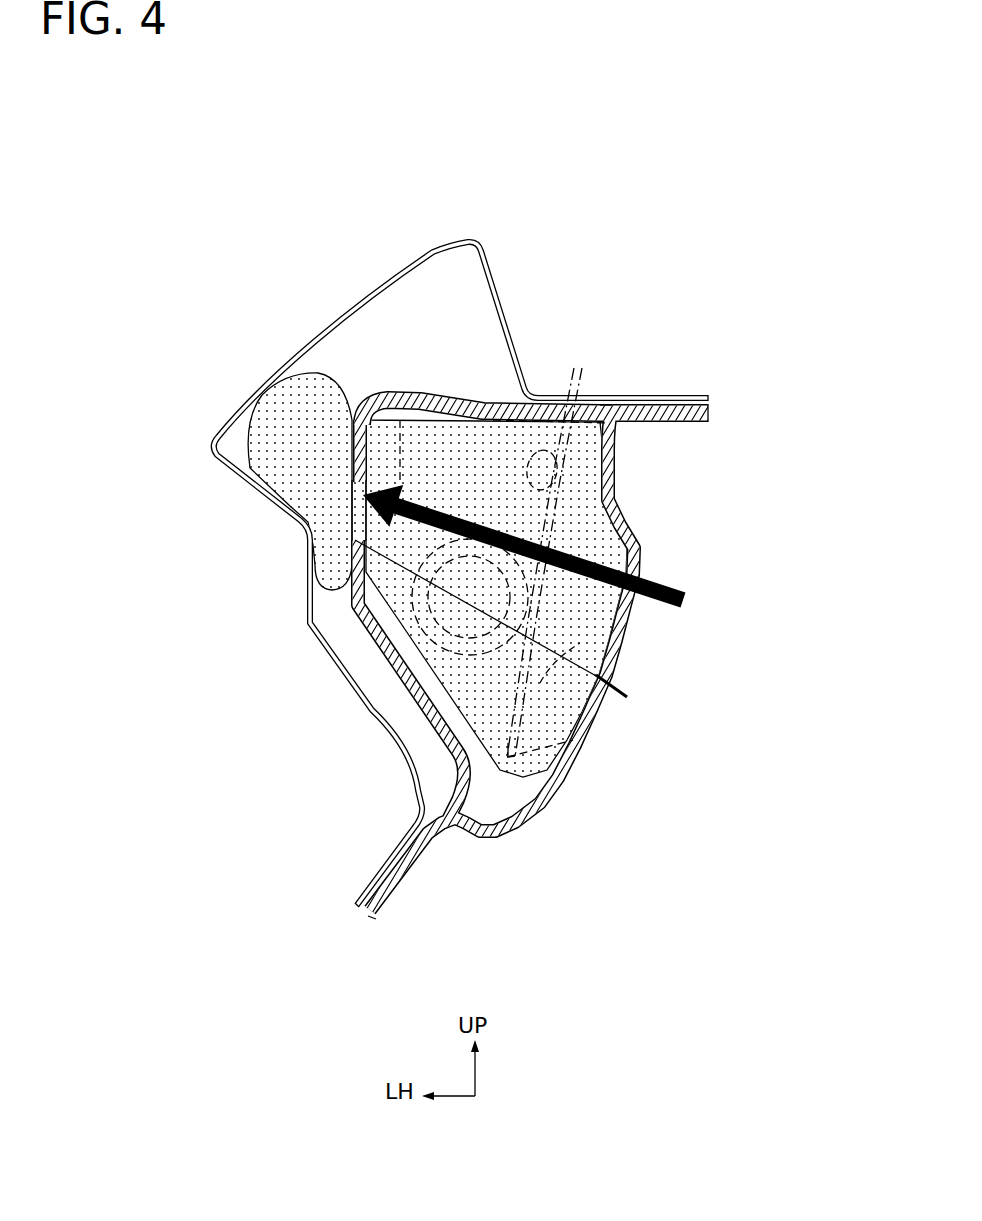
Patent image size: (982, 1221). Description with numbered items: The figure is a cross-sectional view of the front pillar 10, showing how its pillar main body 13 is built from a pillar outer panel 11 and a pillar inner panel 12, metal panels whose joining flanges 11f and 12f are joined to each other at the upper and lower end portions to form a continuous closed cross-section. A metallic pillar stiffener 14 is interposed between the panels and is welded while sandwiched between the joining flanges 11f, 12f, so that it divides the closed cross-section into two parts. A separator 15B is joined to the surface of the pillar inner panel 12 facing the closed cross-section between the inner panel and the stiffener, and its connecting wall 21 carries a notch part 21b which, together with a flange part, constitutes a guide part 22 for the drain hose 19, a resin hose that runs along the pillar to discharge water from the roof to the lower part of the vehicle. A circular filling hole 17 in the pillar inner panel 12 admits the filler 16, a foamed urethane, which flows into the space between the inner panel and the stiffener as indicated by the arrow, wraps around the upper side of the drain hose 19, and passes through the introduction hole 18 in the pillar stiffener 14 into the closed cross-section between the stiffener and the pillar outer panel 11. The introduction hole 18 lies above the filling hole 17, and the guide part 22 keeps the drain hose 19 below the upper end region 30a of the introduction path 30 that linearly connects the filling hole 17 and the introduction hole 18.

The front pillar 10 is at (537, 233).
The pillar outer panel 11 is at (295, 350).
The joining flange 11f is at (683, 394).
The pillar inner panel 12 is at (643, 540).
The joining flange 12f is at (697, 423).
The pillar main body 13 is at (409, 250).
The pillar stiffener 14 is at (450, 400).
The separator 15B is at (605, 403).
The filler 16 is at (598, 680).
The filling hole 17 is at (607, 670).
The introduction hole 18 is at (353, 513).
The drain hose 19 is at (445, 642).
The connecting wall 21 is at (550, 777).
The notch part 21b is at (598, 597).
The guide part 22 is at (500, 637).
The introduction path 30 is at (608, 648).
The upper end region 30a is at (564, 412).